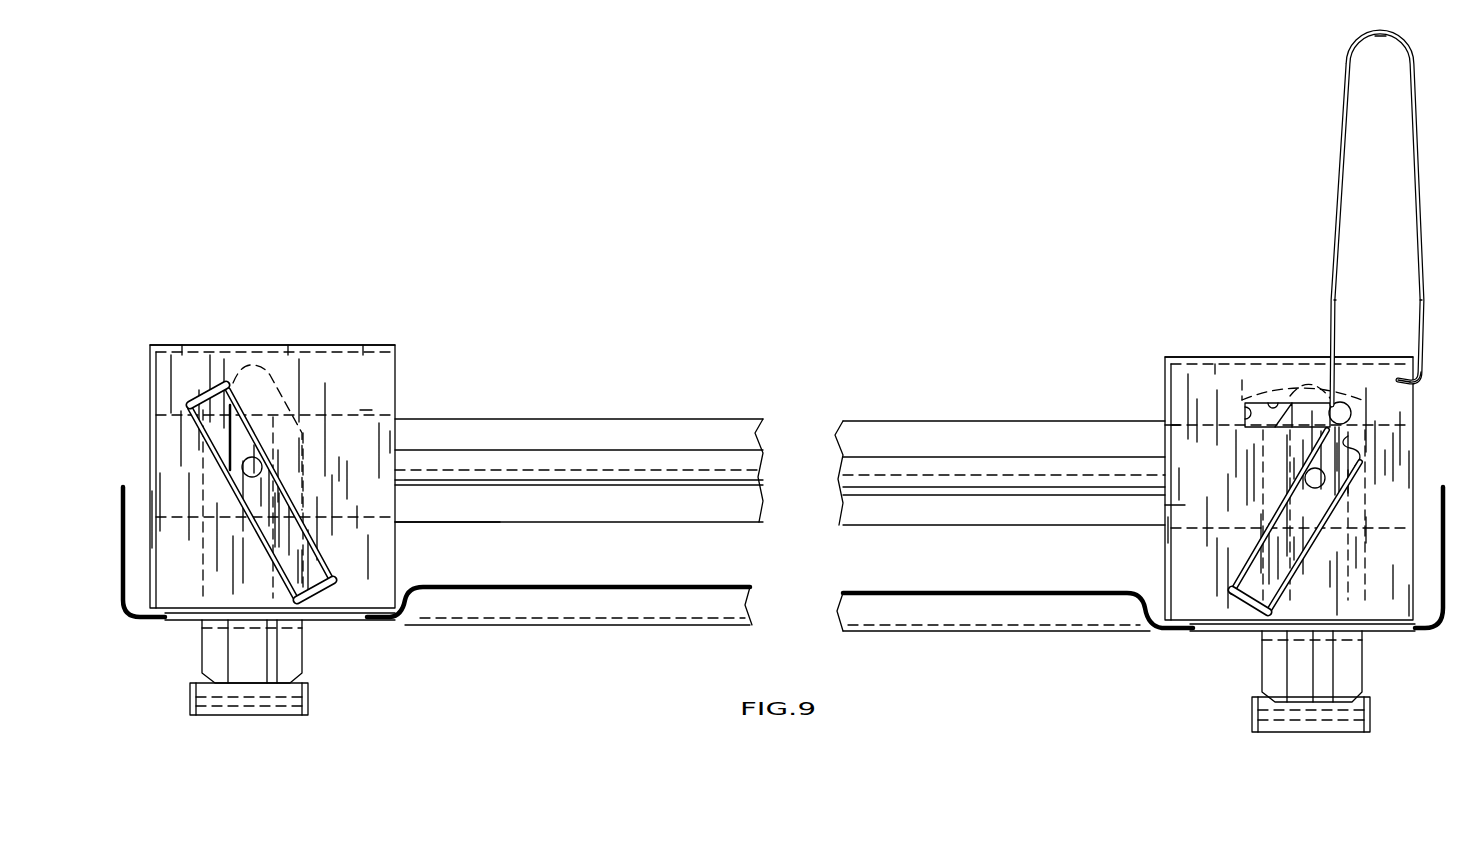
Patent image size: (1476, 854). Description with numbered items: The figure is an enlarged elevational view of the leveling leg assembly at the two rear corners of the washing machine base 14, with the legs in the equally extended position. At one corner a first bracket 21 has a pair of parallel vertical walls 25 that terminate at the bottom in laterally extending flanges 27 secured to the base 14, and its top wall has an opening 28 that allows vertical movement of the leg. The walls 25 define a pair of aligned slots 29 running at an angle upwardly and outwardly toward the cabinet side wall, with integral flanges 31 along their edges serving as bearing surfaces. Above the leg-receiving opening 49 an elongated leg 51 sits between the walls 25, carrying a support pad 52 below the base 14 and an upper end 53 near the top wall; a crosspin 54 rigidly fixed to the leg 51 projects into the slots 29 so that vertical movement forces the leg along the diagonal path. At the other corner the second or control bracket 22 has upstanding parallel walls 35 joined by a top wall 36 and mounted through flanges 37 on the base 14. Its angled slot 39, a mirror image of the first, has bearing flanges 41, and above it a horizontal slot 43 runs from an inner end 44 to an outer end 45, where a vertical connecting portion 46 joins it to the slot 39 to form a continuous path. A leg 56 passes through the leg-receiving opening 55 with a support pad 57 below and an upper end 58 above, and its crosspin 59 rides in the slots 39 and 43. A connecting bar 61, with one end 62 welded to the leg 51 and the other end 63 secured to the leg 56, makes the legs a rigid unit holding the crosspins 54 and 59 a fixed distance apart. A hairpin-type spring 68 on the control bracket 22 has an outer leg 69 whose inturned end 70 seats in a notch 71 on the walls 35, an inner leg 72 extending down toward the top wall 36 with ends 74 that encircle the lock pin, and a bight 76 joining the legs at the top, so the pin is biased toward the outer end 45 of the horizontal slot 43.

The base 14 is at (512, 586).
The first bracket 21 is at (388, 368).
The second bracket 22 is at (1183, 382).
The vertical walls 25 is at (372, 410).
The flanges 27 is at (392, 602).
The opening 28 is at (345, 345).
The slots 29 is at (318, 566).
The flanges 31 is at (286, 508).
The parallel walls 35 is at (1172, 518).
The top wall 36 is at (1215, 358).
The flanges 37 is at (1148, 612).
The slot 39 is at (1246, 574).
The bearing flanges 41 is at (1256, 521).
The horizontal slot 43 is at (1265, 400).
The inner end 44 is at (1250, 425).
The outer end 45 is at (1352, 417).
The vertical connecting portion 46 is at (1362, 452).
The leg-receiving opening 49 is at (350, 621).
The leg 51 is at (290, 654).
The support pad 52 is at (263, 716).
The upper end 53 is at (223, 352).
The crosspin 54 is at (256, 470).
The leg-receiving opening 55 is at (1200, 630).
The leg 56 is at (1265, 666).
The support pad 57 is at (1280, 723).
The upper end 58 is at (1311, 400).
The crosspin 59 is at (1326, 484).
The connecting bar 61 is at (712, 422).
The end 62 is at (406, 520).
The end 63 is at (1165, 428).
The hairpin-type spring 68 is at (1348, 96).
The outer leg 69 is at (1420, 302).
The inturned end 70 is at (1412, 384).
The notch 71 is at (1412, 378).
The inner leg 72 is at (1334, 302).
The ends 74 is at (1352, 410).
The bight 76 is at (1376, 40).